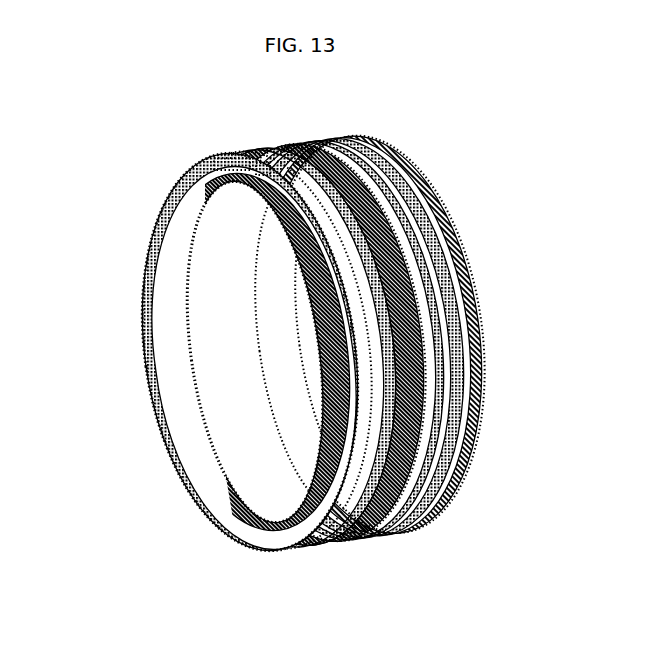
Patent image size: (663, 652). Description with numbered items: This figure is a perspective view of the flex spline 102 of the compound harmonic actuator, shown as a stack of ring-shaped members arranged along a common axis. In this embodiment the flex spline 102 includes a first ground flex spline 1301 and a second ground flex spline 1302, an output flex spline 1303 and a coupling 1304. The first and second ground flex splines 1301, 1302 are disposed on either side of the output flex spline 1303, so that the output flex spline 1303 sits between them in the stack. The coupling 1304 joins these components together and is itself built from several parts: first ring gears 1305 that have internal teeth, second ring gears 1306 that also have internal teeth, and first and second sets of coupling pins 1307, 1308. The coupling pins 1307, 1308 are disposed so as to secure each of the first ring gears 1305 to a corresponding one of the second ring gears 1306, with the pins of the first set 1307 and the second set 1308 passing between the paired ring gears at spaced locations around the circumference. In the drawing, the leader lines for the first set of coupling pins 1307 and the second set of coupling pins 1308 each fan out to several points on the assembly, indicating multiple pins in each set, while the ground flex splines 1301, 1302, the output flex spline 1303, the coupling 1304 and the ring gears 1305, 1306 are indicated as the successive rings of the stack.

The flex spline 102 is at (163, 340).
The first ground flex spline 1301 is at (173, 195).
The second ground flex spline 1302 is at (437, 197).
The output flex spline 1303 is at (358, 193).
The coupling 1304 is at (409, 340).
The first ring gears 1305 is at (235, 550).
The second ring gears 1306 is at (312, 550).
The first set of coupling pins 1307 is at (352, 397).
The second set of coupling pins 1308 is at (382, 202).